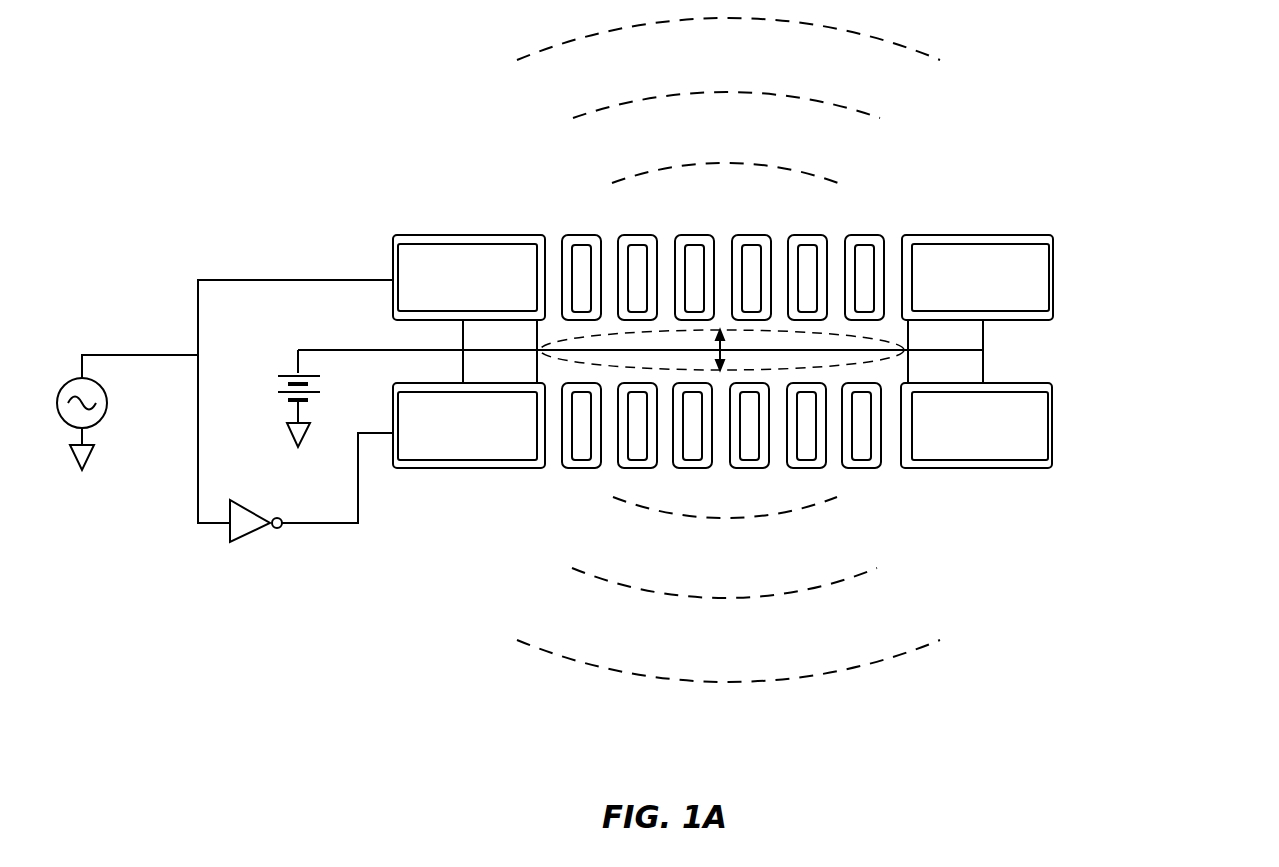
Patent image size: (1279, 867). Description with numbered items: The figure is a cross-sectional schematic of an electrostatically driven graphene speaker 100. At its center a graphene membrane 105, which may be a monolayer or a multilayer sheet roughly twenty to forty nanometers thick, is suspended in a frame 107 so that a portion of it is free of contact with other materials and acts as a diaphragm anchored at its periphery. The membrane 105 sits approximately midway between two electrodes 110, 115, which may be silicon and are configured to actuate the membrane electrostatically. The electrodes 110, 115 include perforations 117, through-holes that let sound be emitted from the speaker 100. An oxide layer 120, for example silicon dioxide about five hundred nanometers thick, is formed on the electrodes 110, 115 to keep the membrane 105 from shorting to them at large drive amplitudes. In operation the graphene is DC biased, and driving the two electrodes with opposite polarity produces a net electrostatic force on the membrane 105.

The electrostatically driven graphene speaker 100 is at (668, 348).
The graphene membrane 105 is at (807, 353).
The frame 107 is at (955, 357).
The electrode 110 is at (1017, 281).
The electrode 115 is at (1017, 430).
The perforations 117 is at (778, 453).
The oxide layer 120 is at (1018, 315).